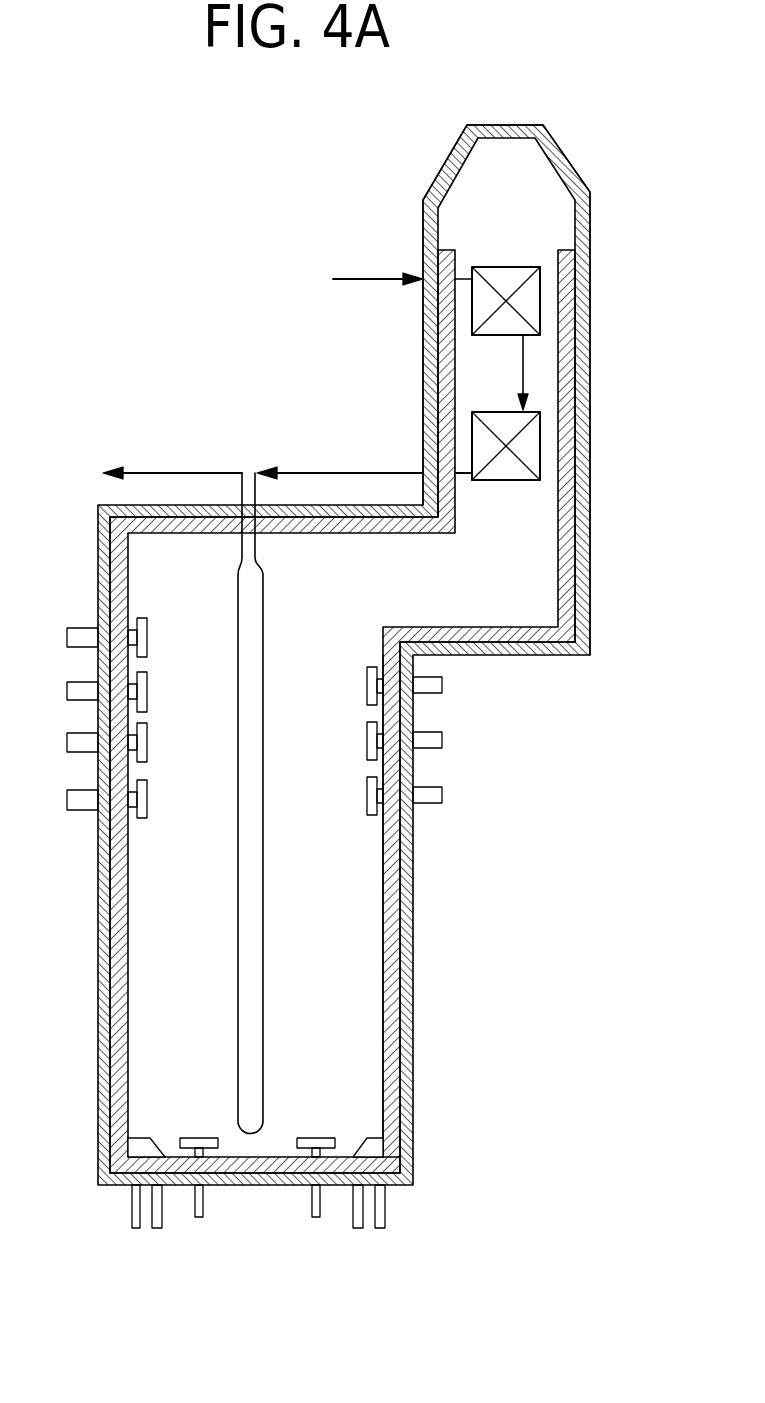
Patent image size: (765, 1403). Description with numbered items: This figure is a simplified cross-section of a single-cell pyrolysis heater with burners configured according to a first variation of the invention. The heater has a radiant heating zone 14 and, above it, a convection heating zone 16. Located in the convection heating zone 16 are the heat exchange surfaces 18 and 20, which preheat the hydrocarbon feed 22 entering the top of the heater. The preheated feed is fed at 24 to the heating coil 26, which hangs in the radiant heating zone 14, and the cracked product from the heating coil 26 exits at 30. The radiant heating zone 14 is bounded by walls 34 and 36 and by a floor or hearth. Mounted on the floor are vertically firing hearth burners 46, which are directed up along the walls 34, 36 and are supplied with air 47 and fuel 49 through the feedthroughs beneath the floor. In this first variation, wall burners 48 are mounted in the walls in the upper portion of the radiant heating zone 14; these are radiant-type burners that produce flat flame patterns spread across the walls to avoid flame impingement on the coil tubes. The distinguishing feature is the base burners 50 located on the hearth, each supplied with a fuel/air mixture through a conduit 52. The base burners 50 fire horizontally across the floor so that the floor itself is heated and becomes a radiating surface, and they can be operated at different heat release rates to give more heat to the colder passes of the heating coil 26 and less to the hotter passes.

The radiant heating zone 14 is at (353, 1005).
The convection heating zone 16 is at (458, 363).
The heat exchange surface 18 is at (522, 297).
The heat exchange surface 20 is at (535, 437).
The hydrocarbon feed 22 is at (363, 276).
The preheated feed inlet 24 is at (336, 473).
The heating coil 26 is at (258, 694).
The cracked product outlet 30 is at (186, 473).
The wall 34 is at (103, 1000).
The wall 36 is at (383, 828).
The hearth burner 46 is at (152, 1146).
The air 47 is at (130, 1219).
The wall burner 48 is at (147, 687).
The fuel 49 is at (157, 1230).
The base burner 50 is at (200, 1137).
The conduit 52 is at (200, 1219).